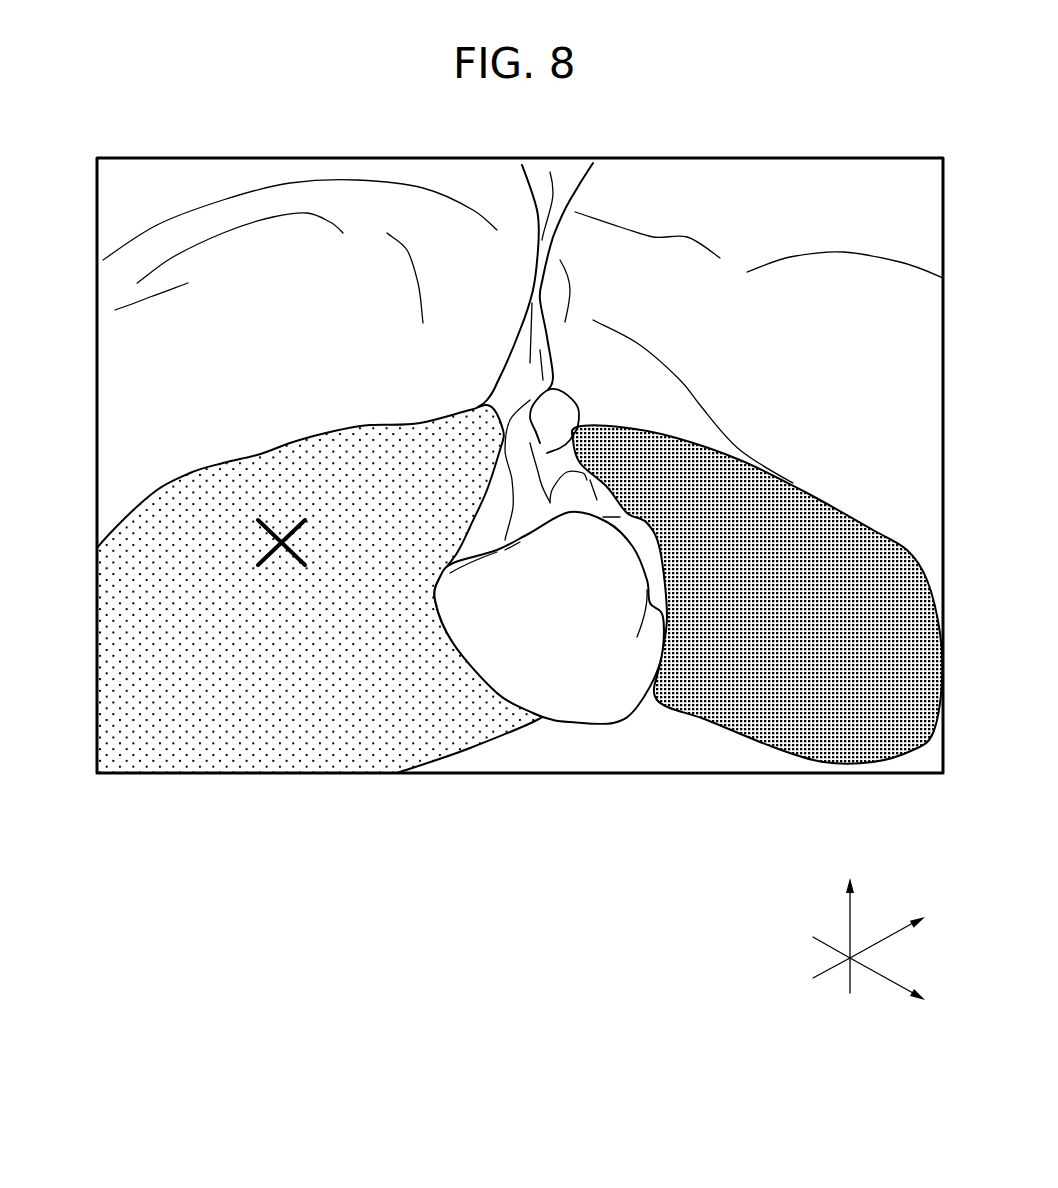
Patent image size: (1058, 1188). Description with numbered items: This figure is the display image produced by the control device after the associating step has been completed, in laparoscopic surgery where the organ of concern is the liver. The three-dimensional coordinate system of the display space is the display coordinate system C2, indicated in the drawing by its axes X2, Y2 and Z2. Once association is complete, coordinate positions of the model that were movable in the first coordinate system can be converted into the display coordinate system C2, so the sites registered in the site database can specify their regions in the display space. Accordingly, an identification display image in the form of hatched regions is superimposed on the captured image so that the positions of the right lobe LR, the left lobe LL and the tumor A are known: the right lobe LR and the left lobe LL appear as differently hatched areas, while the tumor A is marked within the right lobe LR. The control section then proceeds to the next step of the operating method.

The tumor A is at (275, 543).
The right lobe LR is at (303, 750).
The left lobe LL is at (753, 720).
The X axis of second coordinate system X2 is at (905, 990).
The Y axis of second coordinate system Y2 is at (850, 917).
The Z axis of second coordinate system Z2 is at (905, 925).
The display coordinate system C2 is at (840, 983).